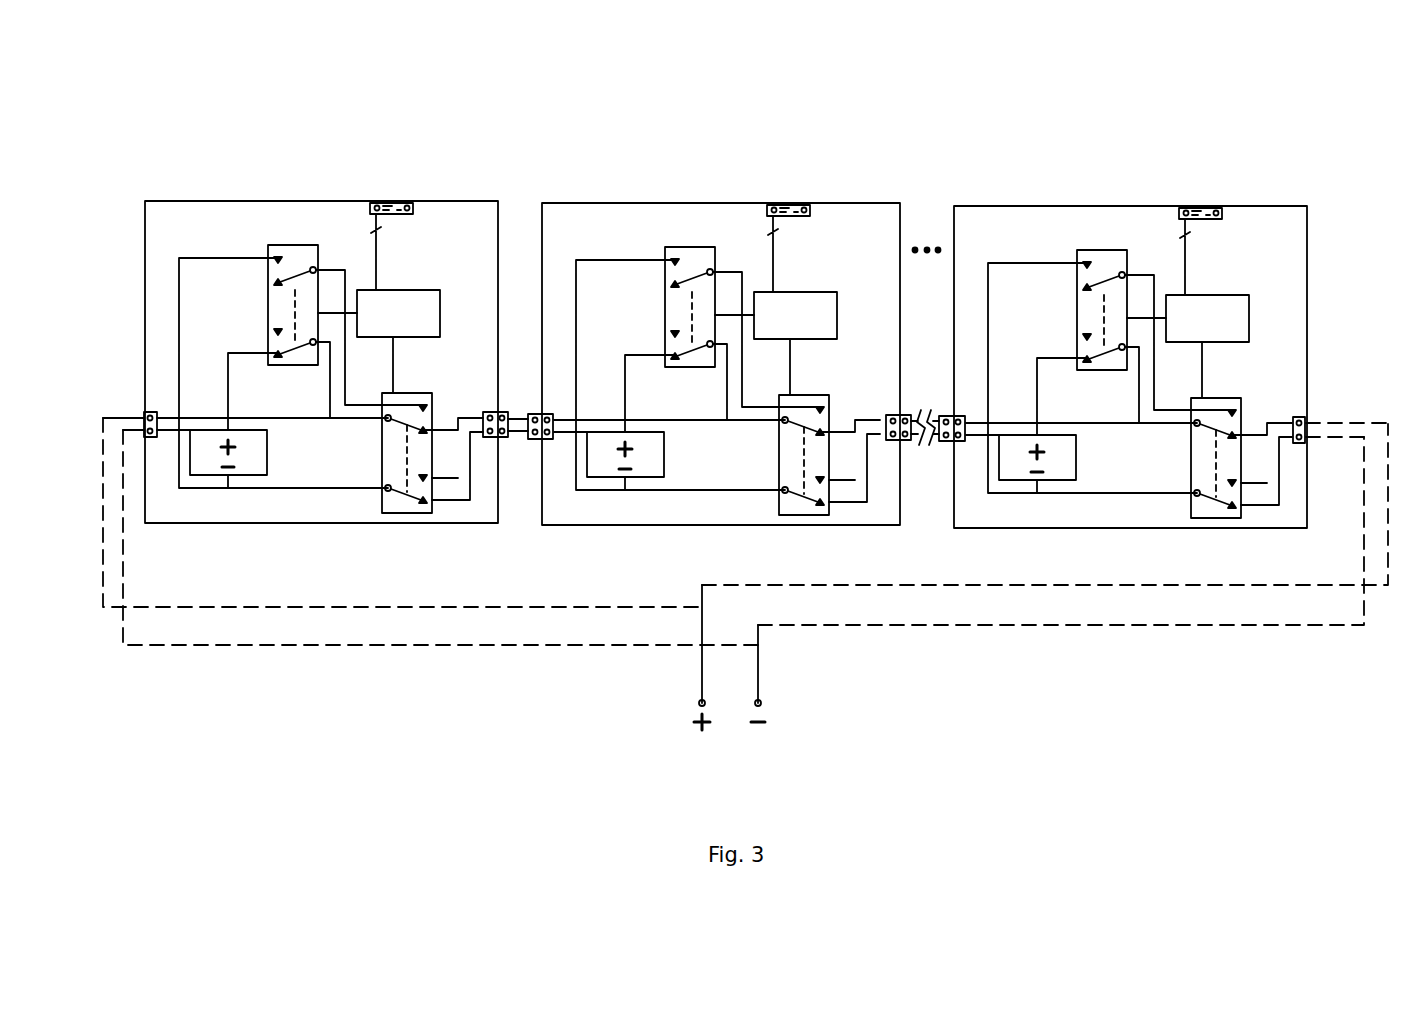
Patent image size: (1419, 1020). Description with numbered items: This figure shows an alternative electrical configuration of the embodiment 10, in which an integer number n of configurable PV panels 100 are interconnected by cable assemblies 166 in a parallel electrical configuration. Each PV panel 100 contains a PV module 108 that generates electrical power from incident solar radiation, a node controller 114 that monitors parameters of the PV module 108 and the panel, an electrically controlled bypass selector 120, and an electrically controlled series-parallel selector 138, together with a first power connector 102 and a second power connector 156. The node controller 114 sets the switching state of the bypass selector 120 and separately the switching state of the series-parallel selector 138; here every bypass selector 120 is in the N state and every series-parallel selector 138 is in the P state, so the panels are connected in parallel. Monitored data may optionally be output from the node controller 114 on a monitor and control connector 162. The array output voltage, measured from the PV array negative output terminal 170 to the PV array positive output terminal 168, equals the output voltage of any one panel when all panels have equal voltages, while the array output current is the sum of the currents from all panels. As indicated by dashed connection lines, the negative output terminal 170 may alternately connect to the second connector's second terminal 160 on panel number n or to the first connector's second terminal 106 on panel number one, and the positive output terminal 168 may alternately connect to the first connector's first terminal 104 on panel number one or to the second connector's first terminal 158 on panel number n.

The embodiment 10 is at (489, 88).
The configurable PV panel 100 is at (181, 201).
The first power connector P1 102 is at (144, 416).
The connector P1 terminal 1 104 is at (144, 417).
The connector P1 terminal 2 106 is at (144, 430).
The PV module 108 is at (268, 432).
The node controller 114 is at (803, 316).
The bypass selector 120 is at (279, 245).
The series-parallel selector Xn 138 is at (398, 392).
The second power connector P2 156 is at (1302, 416).
The connector P2 terminal 1 158 is at (1306, 422).
The connector P2 terminal 2 160 is at (1306, 437).
The monitor and control connector P3 162 is at (405, 214).
The cable assembly 166 is at (500, 444).
The PV array positive output terminal 168 is at (699, 703).
The PV array negative output terminal 170 is at (762, 703).